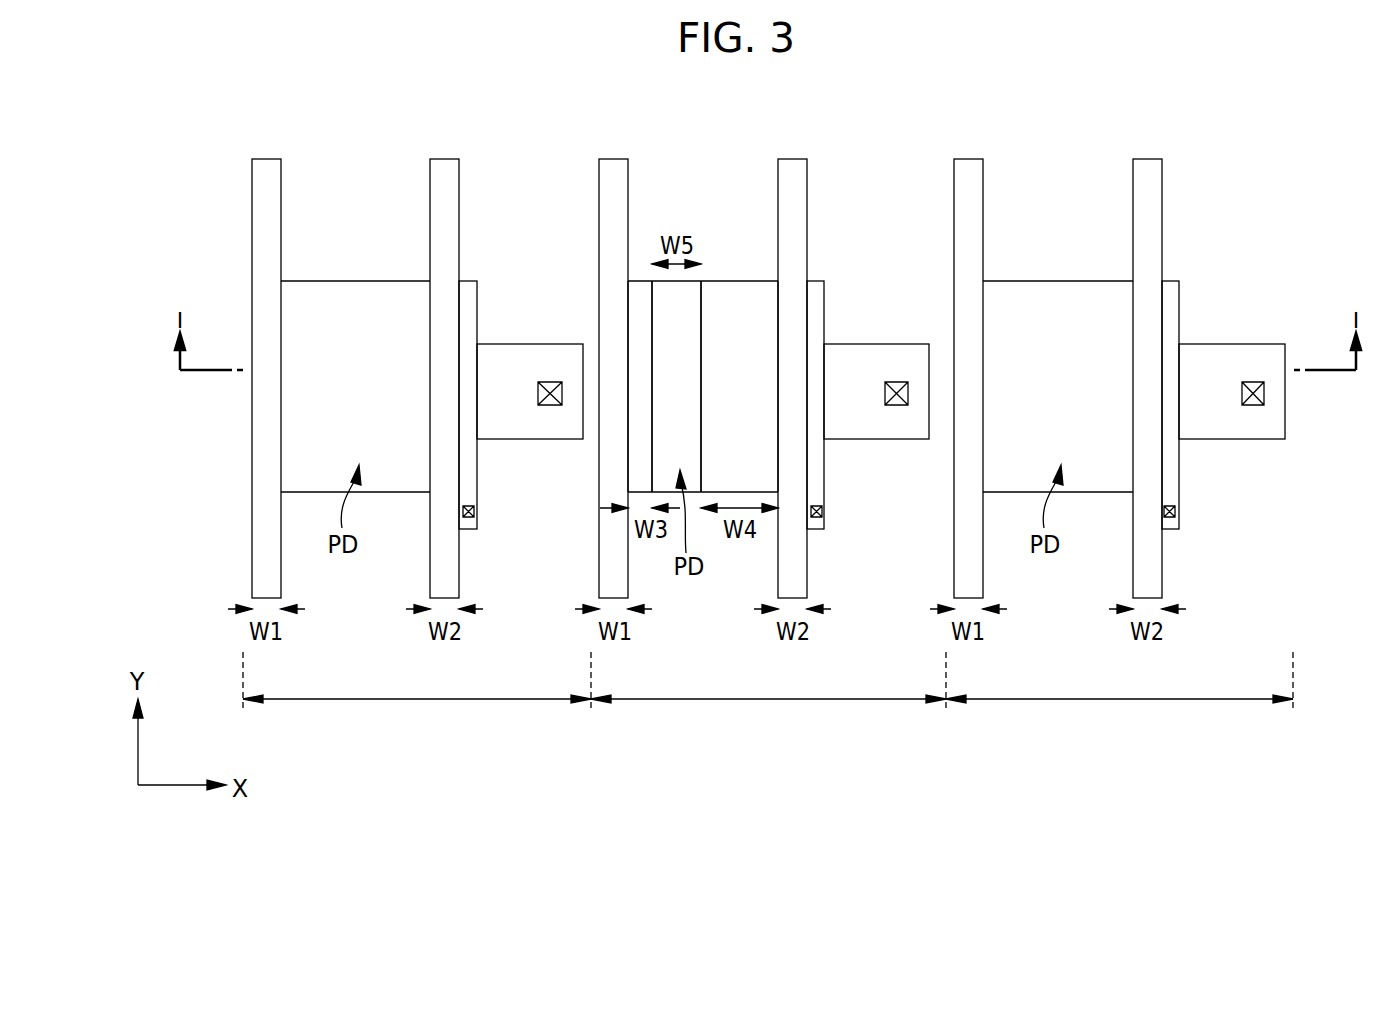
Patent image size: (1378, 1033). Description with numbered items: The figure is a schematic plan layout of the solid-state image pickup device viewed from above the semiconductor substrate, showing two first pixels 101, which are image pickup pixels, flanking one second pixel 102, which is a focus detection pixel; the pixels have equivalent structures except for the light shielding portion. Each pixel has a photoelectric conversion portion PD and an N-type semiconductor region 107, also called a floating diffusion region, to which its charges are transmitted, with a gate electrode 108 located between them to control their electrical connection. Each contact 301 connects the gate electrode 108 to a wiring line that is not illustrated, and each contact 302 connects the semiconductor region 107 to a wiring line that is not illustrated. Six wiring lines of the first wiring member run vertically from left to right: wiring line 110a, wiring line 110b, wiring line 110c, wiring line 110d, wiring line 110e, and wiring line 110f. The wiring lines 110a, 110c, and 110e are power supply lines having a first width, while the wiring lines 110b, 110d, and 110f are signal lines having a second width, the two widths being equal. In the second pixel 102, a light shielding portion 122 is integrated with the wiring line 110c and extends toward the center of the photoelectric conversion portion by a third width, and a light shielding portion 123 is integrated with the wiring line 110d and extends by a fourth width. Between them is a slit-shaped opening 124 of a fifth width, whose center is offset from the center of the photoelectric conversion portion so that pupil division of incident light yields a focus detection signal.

The wiring line 110a is at (265, 174).
The wiring line 110b is at (443, 174).
The wiring line 110c is at (613, 174).
The wiring line 110d is at (791, 174).
The wiring line 110e is at (967, 174).
The wiring line 110f is at (1146, 174).
The semiconductor region 107 is at (525, 353).
The gate electrode 108 is at (467, 287).
The light shielding portion 122 is at (639, 290).
The light shielding portion 123 is at (768, 295).
The opening 124 is at (687, 316).
The contact 301 is at (474, 512).
The contact 302 is at (547, 405).
The first pixel 101 is at (768, 687).
The second pixel 102 is at (768, 687).